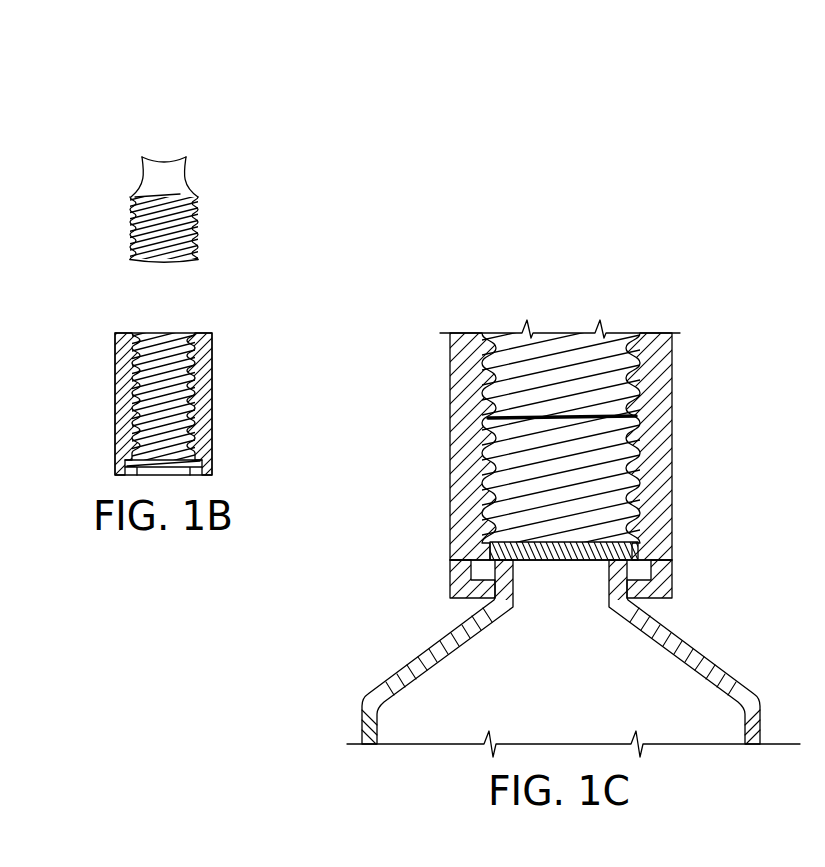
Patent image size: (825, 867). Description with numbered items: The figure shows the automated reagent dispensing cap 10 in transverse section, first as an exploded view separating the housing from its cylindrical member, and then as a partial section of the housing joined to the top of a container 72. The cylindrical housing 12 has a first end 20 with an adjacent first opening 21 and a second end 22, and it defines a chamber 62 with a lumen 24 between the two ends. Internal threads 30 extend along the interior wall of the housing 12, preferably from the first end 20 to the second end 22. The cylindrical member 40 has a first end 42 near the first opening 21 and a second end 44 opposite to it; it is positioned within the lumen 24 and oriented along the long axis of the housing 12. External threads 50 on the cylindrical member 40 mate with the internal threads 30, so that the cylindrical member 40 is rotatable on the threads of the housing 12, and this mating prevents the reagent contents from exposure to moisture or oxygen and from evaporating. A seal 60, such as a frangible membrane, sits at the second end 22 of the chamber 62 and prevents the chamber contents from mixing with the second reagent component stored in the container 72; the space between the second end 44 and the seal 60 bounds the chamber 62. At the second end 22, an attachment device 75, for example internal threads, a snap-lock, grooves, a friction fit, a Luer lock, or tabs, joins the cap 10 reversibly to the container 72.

In FIG. 1C, the automated reagent dispensing cap 10 is at (748, 355).
In FIG. 1B, the cylindrical housing 12 is at (116, 371).
In FIG. 1C, the cylindrical housing 12 is at (456, 357).
In FIG. 1B, the first end 20 is at (156, 395).
In FIG. 1C, the first end 20 is at (645, 333).
In FIG. 1B, the first opening 21 is at (161, 331).
In FIG. 1C, the second end 22 is at (456, 561).
In FIG. 1B, the lumen 24 is at (159, 399).
In FIG. 1C, the lumen 24 is at (602, 505).
In FIG. 1B, the internal threads 30 is at (131, 416).
In FIG. 1C, the internal threads 30 is at (557, 498).
In FIG. 1B, the cylindrical member 40 is at (175, 202).
In FIG. 1C, the cylindrical member 40 is at (561, 382).
In FIG. 1B, the first end 42 is at (142, 158).
In FIG. 1B, the second end 44 is at (186, 259).
In FIG. 1C, the second end 44 is at (618, 422).
In FIG. 1B, the external threads 50 is at (198, 215).
In FIG. 1C, the external threads 50 is at (500, 392).
In FIG. 1C, the seal 60 is at (622, 553).
In FIG. 1C, the chamber 62 is at (518, 483).
In FIG. 1C, the container 72 is at (752, 718).
In FIG. 1B, the attachment device 75 is at (125, 471).
In FIG. 1C, the attachment device 75 is at (466, 600).